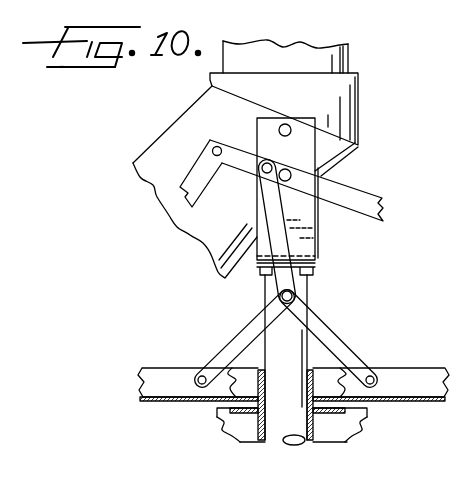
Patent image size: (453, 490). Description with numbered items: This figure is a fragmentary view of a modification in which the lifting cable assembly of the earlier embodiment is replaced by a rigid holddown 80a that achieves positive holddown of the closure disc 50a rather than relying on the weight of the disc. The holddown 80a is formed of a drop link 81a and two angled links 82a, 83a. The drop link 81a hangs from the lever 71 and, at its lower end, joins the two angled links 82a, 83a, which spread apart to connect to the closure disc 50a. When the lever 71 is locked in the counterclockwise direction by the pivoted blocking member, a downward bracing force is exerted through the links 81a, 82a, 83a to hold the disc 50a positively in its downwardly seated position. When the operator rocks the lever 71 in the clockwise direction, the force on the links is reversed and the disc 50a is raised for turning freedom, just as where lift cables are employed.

The closure disc 50a is at (156, 401).
The lever 71 is at (355, 186).
The rigid holddown 80a is at (302, 293).
The drop link 81a is at (273, 207).
The angled link 82a is at (237, 338).
The angled link 83a is at (347, 348).